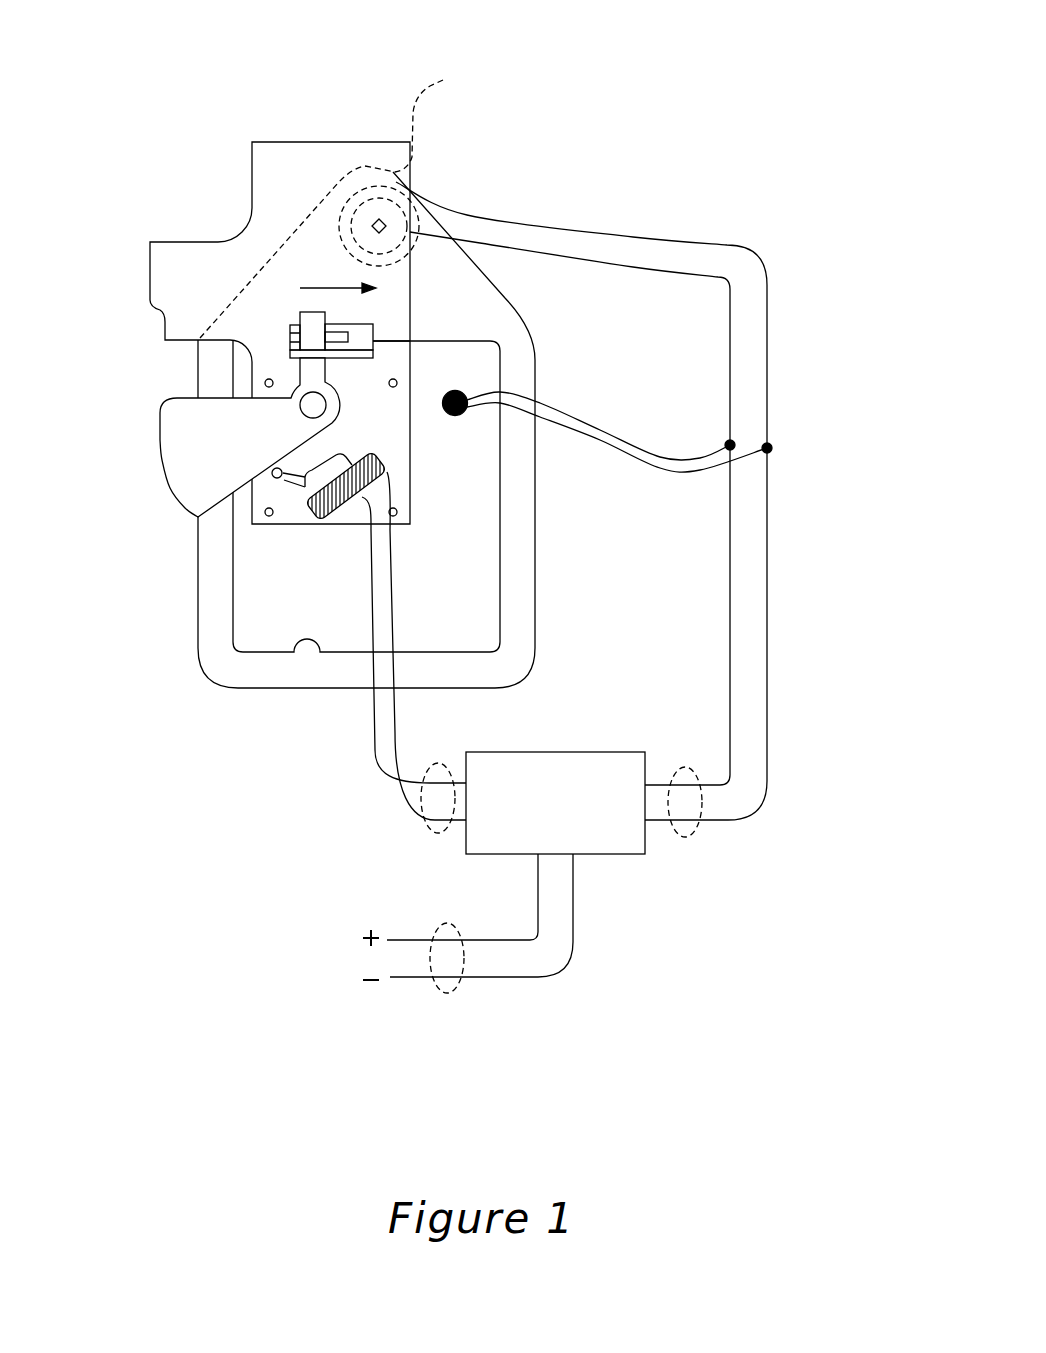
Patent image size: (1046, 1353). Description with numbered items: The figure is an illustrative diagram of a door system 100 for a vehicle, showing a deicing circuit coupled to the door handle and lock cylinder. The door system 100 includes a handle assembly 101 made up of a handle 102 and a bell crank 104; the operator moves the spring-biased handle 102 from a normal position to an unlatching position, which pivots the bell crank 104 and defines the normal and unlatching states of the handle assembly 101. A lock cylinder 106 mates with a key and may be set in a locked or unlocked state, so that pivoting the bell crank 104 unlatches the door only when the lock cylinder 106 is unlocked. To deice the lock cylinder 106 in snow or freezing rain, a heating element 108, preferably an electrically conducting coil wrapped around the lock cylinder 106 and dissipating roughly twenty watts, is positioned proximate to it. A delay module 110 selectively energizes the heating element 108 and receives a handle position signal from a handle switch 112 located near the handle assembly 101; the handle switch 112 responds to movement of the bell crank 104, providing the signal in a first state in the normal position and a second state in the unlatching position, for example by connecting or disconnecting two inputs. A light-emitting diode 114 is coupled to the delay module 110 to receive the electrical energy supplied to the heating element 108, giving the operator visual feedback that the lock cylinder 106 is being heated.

The door system 100 is at (758, 160).
The handle assembly 101 is at (135, 233).
The handle 102 is at (340, 142).
The bell crank 104 is at (160, 460).
The lock cylinder 106 is at (387, 224).
The heating element 108 is at (481, 202).
The delay module 110 is at (612, 854).
The handle switch 112 is at (318, 522).
The light-emitting diode 114 is at (457, 417).